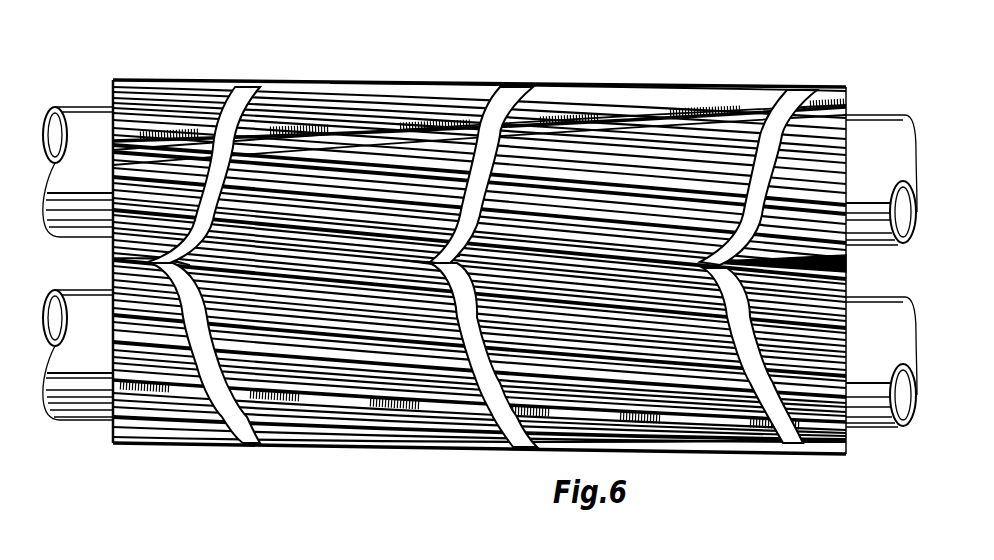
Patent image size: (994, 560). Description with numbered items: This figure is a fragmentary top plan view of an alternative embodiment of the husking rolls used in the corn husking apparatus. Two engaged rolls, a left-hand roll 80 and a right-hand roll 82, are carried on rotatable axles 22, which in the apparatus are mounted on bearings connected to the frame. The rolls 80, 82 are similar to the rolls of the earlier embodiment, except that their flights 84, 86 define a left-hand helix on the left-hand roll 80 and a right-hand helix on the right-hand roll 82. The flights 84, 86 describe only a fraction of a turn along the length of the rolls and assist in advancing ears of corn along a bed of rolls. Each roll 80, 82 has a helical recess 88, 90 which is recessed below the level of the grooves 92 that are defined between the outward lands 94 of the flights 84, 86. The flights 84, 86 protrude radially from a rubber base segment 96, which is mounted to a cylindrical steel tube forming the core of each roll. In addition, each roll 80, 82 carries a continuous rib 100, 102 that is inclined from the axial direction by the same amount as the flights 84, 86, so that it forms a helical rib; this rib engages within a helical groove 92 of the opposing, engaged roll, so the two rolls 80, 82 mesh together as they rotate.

The rotatable axle 22 is at (85, 107).
The left-hand roll 80 is at (333, 84).
The right-hand roll 82 is at (341, 452).
The flight 84 is at (283, 97).
The flight 86 is at (205, 407).
The helical recess 88 is at (520, 96).
The helical recess 90 is at (157, 295).
The groove 92 is at (397, 110).
The outward land 94 is at (479, 295).
The rubber base segment 96 is at (113, 88).
The continuous rib 100 is at (667, 90).
The continuous rib 102 is at (697, 433).